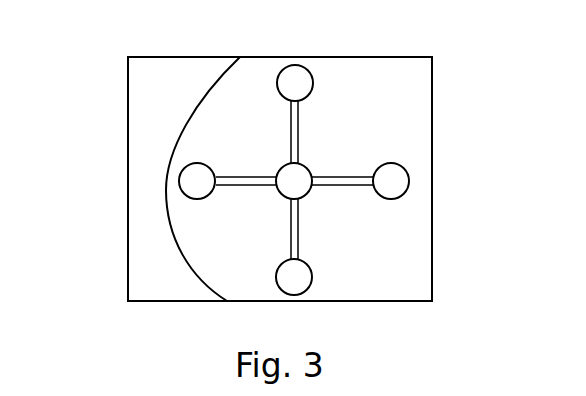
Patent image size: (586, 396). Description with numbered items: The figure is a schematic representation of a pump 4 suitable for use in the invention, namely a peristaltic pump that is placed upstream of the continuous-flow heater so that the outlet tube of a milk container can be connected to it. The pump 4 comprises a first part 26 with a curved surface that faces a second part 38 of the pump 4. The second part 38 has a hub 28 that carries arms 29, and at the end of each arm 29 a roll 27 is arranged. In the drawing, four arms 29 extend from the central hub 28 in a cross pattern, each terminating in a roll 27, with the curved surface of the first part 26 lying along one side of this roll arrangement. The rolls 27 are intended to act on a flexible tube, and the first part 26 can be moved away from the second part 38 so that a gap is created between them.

The first pump 4 is at (462, 114).
The first part 26 is at (128, 178).
The roll 27 is at (293, 78).
The hub 28 is at (307, 192).
The arm 29 is at (299, 118).
The second part 38 is at (432, 290).